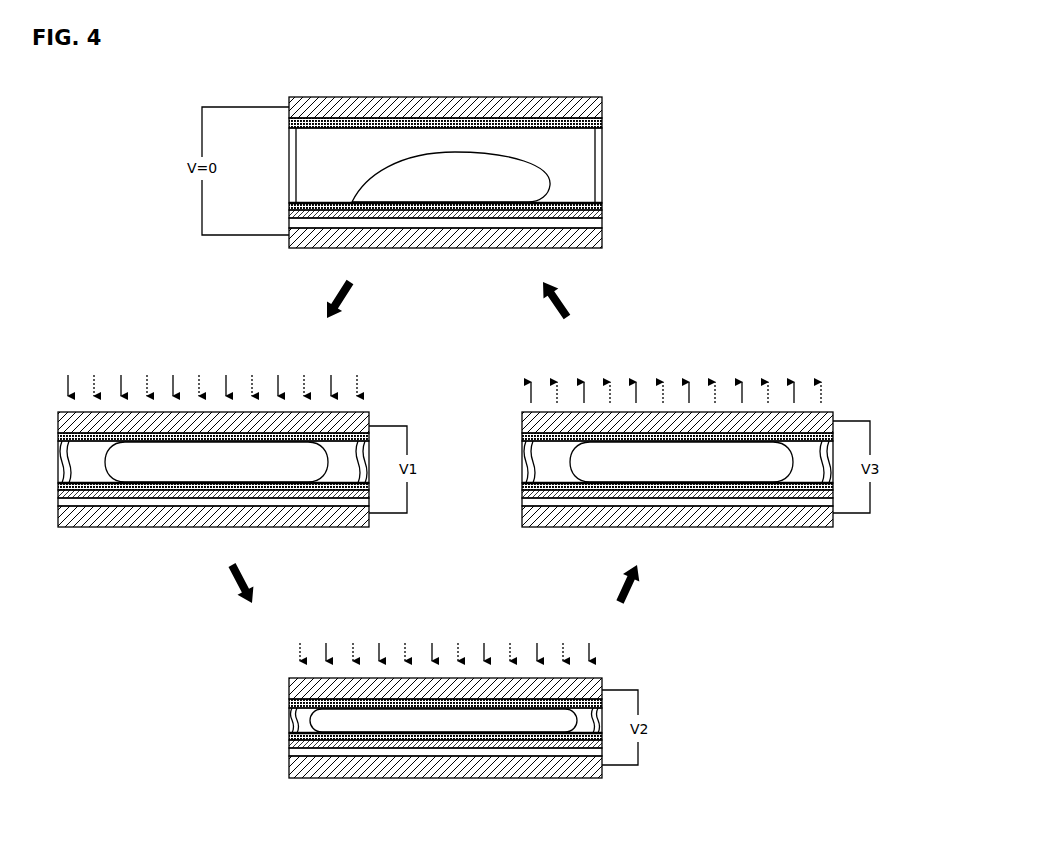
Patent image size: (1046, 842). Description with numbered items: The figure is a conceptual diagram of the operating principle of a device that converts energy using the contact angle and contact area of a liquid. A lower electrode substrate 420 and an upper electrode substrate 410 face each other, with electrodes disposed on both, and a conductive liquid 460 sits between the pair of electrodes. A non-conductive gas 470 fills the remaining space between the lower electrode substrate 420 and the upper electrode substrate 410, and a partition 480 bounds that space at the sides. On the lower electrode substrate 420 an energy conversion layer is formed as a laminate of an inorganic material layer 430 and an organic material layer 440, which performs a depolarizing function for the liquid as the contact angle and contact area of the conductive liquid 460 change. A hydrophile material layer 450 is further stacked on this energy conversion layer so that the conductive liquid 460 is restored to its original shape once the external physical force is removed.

The upper electrode substrate 410 is at (603, 106).
The lower electrode substrate 420 is at (603, 238).
The inorganic material layer 430 is at (603, 223).
The organic material layer 440 is at (603, 213).
The hydrophile material layer 450 is at (606, 127).
The conductive liquid 460 is at (366, 160).
The non-conductive gas 470 is at (340, 169).
The partition 480 is at (291, 194).